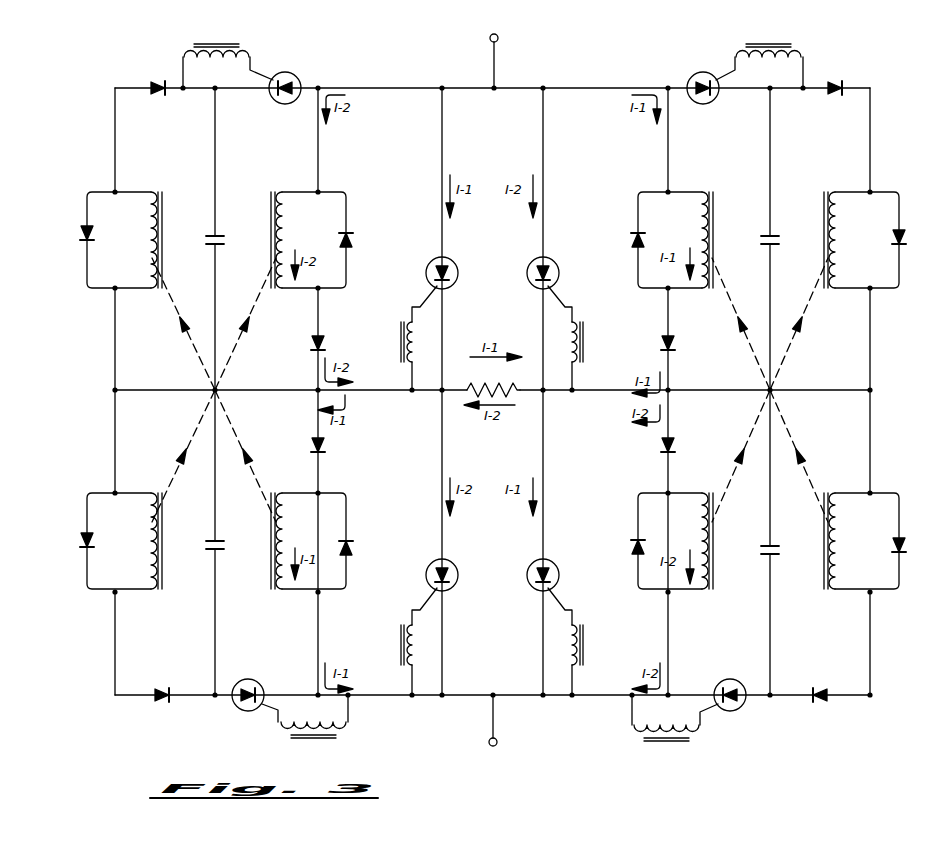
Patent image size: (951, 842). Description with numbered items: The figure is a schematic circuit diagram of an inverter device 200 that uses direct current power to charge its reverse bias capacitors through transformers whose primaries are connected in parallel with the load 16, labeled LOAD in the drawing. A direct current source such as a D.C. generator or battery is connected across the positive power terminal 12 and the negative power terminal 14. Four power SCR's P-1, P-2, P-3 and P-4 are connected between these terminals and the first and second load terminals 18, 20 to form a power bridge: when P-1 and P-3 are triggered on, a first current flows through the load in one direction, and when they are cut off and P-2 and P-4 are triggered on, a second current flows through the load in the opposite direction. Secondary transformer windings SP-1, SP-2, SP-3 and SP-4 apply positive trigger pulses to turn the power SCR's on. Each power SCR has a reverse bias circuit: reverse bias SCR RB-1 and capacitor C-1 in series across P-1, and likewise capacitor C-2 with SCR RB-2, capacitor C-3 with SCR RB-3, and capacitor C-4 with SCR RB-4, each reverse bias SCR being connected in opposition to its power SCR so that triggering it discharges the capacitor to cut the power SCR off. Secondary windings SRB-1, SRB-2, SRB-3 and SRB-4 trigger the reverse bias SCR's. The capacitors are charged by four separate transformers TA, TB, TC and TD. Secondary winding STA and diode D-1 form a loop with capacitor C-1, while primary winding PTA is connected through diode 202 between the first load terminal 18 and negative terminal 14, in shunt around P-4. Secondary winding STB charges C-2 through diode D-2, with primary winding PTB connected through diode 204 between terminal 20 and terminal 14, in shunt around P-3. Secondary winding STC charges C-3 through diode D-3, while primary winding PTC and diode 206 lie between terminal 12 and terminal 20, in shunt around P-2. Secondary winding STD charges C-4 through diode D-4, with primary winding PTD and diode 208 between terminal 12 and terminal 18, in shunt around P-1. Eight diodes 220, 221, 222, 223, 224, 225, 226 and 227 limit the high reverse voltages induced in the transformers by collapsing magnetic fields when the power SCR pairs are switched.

The positive power terminal 12 is at (490, 39).
The negative power terminal 14 is at (488, 743).
The load 16 is at (514, 388).
The first load terminal 18 is at (440, 393).
The second load terminal 20 is at (546, 393).
The inverter device 200 is at (442, 80).
The diode 202 is at (328, 448).
The diode 204 is at (660, 446).
The diode 206 is at (658, 345).
The diode 208 is at (310, 343).
The diode 220 is at (84, 226).
The diode 221 is at (352, 242).
The diode 222 is at (634, 242).
The diode 223 is at (904, 235).
The diode 224 is at (898, 552).
The diode 225 is at (636, 546).
The diode 226 is at (350, 546).
The diode 227 is at (84, 544).
The diode D-1 is at (164, 78).
The diode D-2 is at (838, 80).
The diode D-3 is at (820, 690).
The diode D-4 is at (162, 684).
The reverse bias SCR RB-1 is at (294, 78).
The reverse bias SCR RB-2 is at (710, 76).
The reverse bias SCR RB-3 is at (742, 680).
The reverse bias SCR RB-4 is at (248, 681).
The secondary transformer winding SRB-1 is at (240, 48).
The secondary transformer winding SRB-2 is at (800, 50).
The secondary transformer winding SRB-3 is at (694, 736).
The secondary transformer winding SRB-4 is at (343, 728).
The secondary winding STA is at (124, 240).
The secondary winding STB is at (844, 260).
The secondary winding STC is at (844, 554).
The secondary winding STD is at (124, 541).
The primary winding PTA is at (294, 536).
The primary winding PTB is at (700, 533).
The primary winding PTC is at (675, 240).
The primary winding PTD is at (296, 242).
The transformer TA is at (204, 350).
The transformer TB is at (794, 343).
The transformer TC is at (784, 418).
The transformer TD is at (196, 439).
The reverse bias capacitor C-1 is at (214, 234).
The reverse bias capacitor C-2 is at (768, 234).
The reverse bias capacitor C-3 is at (768, 547).
The reverse bias capacitor C-4 is at (212, 542).
The power SCR P-1 is at (434, 260).
The power SCR P-2 is at (552, 260).
The power SCR P-3 is at (552, 562).
The power SCR P-4 is at (436, 562).
The secondary transformer winding SP-1 is at (402, 326).
The secondary transformer winding SP-2 is at (584, 330).
The secondary transformer winding SP-3 is at (584, 626).
The secondary transformer winding SP-4 is at (402, 624).
The load LOAD is at (493, 380).